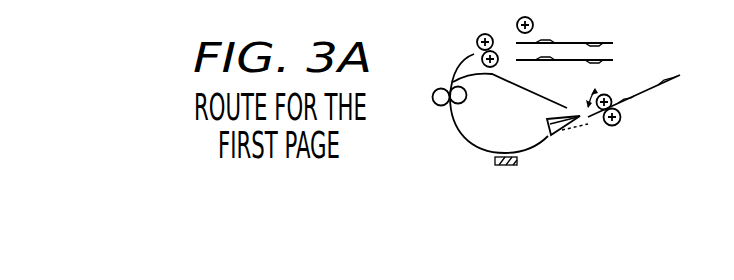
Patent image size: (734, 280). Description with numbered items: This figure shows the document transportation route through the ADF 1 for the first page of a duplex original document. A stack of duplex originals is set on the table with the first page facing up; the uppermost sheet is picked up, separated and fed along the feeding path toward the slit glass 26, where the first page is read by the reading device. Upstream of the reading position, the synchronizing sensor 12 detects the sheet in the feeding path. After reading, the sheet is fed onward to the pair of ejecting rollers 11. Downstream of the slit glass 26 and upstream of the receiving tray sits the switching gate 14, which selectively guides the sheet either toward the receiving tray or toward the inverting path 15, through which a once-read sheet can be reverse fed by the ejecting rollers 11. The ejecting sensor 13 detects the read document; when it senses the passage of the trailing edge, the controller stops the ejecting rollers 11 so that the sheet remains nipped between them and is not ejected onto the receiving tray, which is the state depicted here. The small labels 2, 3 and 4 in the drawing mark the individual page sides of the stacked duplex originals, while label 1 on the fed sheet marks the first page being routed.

The ADF 1 is at (600, 63).
The second page 2 is at (614, 56).
The third page 3 is at (564, 76).
The fourth page 4 is at (596, 77).
The ejecting rollers 11 is at (622, 119).
The synchronizing sensor 12 is at (455, 128).
The ejecting sensor 13 is at (589, 127).
The switching gate 14 is at (566, 140).
The inverting path 15 is at (466, 78).
The slit glass 26 is at (493, 163).